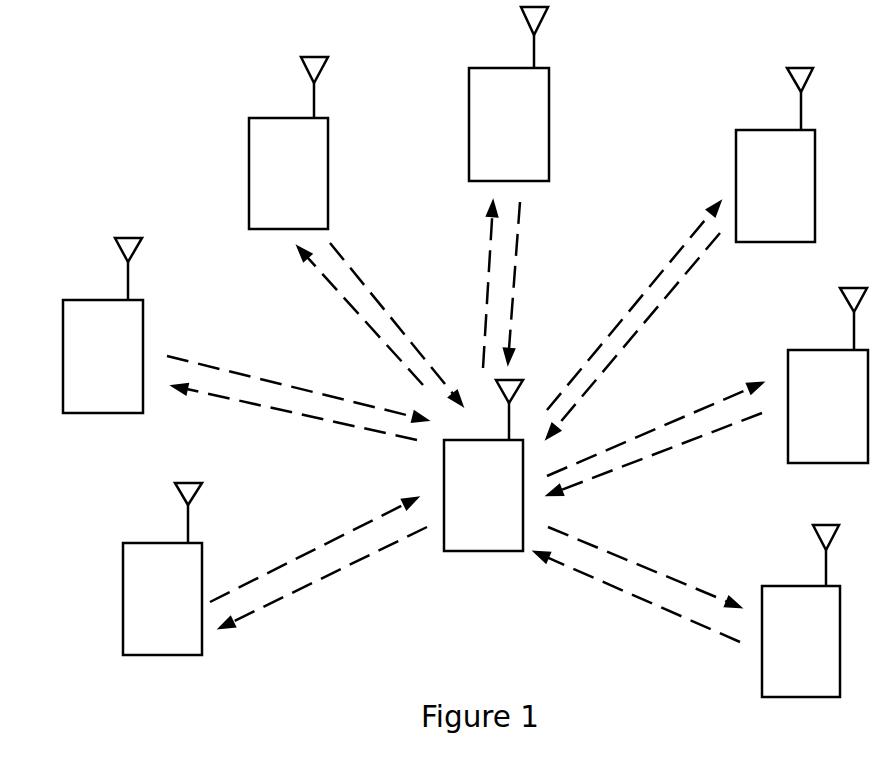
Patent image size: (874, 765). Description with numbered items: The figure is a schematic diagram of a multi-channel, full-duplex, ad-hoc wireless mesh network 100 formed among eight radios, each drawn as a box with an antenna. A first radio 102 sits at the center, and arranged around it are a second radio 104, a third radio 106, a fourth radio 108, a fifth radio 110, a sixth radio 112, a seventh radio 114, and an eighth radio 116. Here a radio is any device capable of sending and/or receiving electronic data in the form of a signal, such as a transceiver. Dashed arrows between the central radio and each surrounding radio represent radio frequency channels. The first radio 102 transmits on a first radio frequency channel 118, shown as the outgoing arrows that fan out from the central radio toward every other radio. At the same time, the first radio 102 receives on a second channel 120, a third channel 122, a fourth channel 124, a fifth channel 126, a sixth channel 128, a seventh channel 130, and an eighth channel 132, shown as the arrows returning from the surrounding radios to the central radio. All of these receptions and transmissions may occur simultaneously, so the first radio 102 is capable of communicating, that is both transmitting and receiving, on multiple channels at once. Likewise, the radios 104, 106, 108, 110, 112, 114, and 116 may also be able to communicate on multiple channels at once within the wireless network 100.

The wireless mesh network 100 is at (78, 65).
The first radio 102 is at (465, 506).
The second radio 104 is at (144, 611).
The third radio 106 is at (782, 654).
The fourth radio 108 is at (756, 198).
The fifth radio 110 is at (270, 184).
The sixth radio 112 is at (85, 369).
The seventh radio 114 is at (810, 419).
The eighth radio 116 is at (490, 136).
The first radio frequency channel 118 is at (467, 416).
The second channel 120 is at (313, 550).
The third channel 122 is at (637, 597).
The fourth channel 124 is at (633, 335).
The fifth channel 126 is at (396, 324).
The sixth channel 128 is at (297, 374).
The seventh channel 130 is at (655, 454).
The eighth channel 132 is at (539, 282).